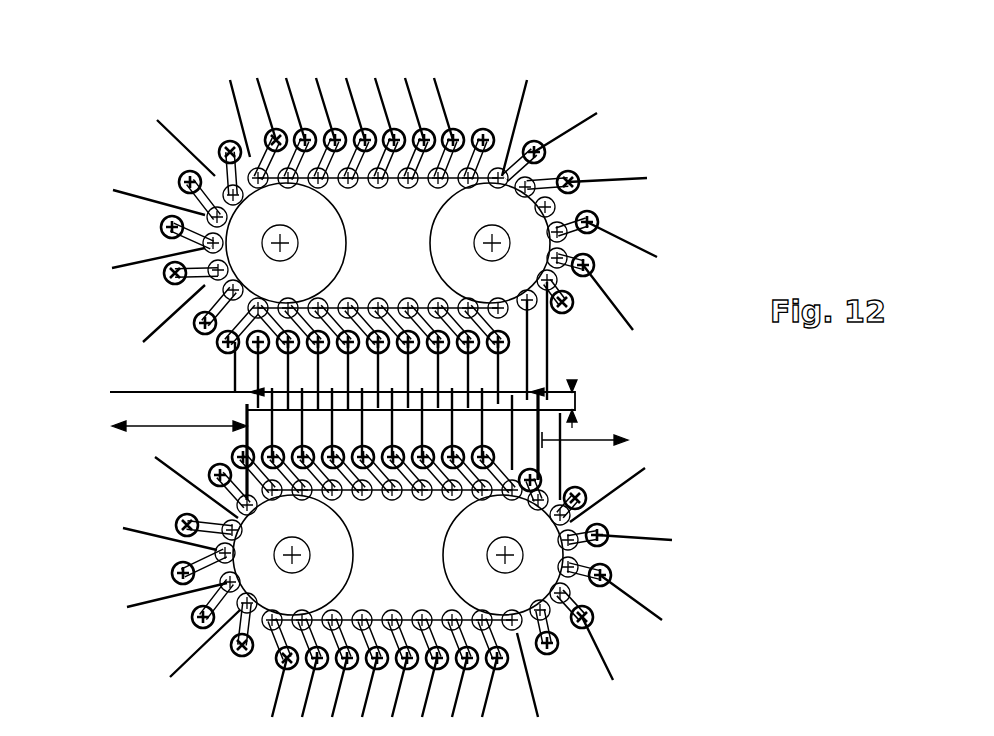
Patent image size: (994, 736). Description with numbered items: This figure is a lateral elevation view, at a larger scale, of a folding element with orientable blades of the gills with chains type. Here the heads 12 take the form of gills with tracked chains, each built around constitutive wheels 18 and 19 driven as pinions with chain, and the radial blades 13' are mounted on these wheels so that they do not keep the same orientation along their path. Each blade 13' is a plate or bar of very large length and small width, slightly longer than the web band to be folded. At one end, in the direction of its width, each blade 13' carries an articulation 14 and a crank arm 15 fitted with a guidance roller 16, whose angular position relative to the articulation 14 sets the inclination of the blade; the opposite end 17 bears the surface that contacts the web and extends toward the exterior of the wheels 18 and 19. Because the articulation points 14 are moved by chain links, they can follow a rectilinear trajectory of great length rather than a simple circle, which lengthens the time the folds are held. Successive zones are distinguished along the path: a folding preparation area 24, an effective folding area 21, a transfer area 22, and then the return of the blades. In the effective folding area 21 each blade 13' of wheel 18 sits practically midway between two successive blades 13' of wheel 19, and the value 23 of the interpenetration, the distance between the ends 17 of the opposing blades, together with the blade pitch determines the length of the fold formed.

The heads 12 is at (666, 199).
The blades 13' is at (422, 388).
The articulation 14 is at (376, 150).
The crank arm 15 is at (218, 158).
The guidance roller 16 is at (183, 178).
The end 17 is at (108, 274).
The wheel 18 is at (292, 223).
The wheel 19 is at (322, 527).
The effective folding area 21 is at (342, 387).
The transfer area 22 is at (585, 427).
The value of the interpenetration 23 is at (568, 365).
The folding preparation area 24 is at (179, 413).